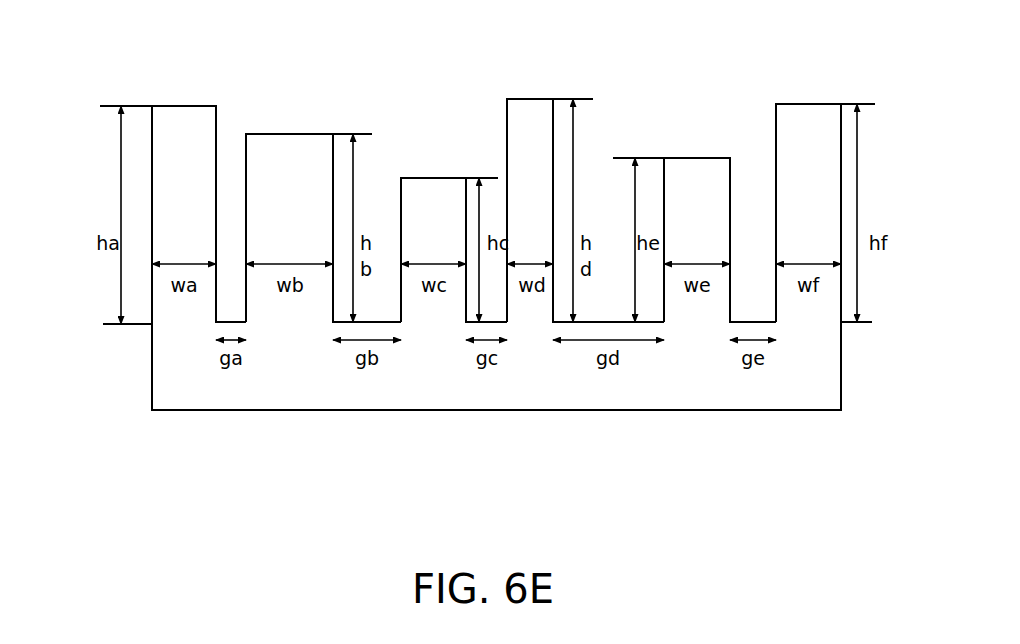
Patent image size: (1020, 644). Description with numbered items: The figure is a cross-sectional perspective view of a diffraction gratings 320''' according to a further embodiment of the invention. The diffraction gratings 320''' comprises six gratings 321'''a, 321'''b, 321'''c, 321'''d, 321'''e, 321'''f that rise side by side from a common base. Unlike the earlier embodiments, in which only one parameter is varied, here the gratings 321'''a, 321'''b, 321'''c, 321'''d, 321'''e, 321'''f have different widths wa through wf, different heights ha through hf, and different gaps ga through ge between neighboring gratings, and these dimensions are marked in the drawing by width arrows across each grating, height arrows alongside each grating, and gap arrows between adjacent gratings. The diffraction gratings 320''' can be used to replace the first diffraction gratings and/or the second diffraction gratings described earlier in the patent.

The diffraction gratings 320''' is at (451, 366).
The grating 321'''a is at (186, 199).
The grating 321'''b is at (323, 198).
The grating 321'''c is at (454, 199).
The grating 321'''d is at (585, 180).
The grating 321'''e is at (698, 198).
The grating 321'''f is at (829, 183).